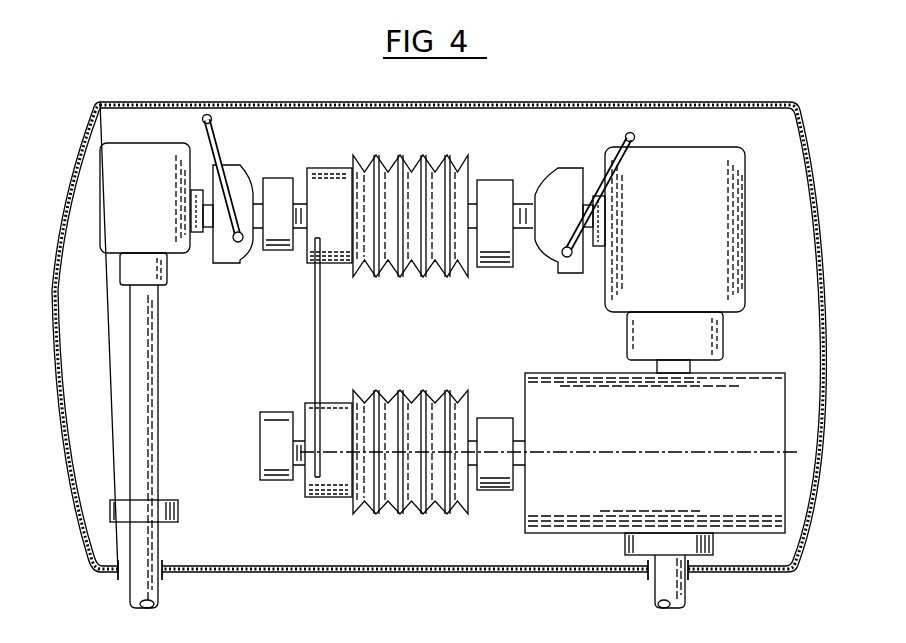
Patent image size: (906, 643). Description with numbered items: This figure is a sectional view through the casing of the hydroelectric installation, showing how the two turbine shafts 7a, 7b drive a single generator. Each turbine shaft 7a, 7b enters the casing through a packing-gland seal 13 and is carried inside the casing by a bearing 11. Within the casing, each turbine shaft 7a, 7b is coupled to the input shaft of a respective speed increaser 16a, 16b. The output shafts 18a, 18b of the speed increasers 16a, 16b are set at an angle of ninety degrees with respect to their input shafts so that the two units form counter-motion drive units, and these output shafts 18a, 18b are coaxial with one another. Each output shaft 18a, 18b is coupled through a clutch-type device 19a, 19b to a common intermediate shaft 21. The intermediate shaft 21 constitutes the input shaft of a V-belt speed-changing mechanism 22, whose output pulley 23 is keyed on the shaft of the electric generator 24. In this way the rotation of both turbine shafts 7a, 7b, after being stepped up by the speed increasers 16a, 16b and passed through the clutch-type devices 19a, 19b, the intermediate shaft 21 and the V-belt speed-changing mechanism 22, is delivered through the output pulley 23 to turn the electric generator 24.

The shaft 7a is at (687, 595).
The shaft 7b is at (153, 590).
The bearing 11 is at (178, 510).
The packing-gland seal 13 is at (165, 568).
The speed increaser 16a is at (722, 208).
The speed increaser 16b is at (128, 162).
The output shaft 18a is at (592, 250).
The output shaft 18b is at (200, 245).
The clutch-type device 19a is at (238, 170).
The clutch-type device 19b is at (565, 182).
The common intermediate shaft 21 is at (300, 205).
The V-belt speed-changing mechanism 22 is at (309, 345).
The output pulley 23 is at (416, 514).
The electric generator 24 is at (737, 392).